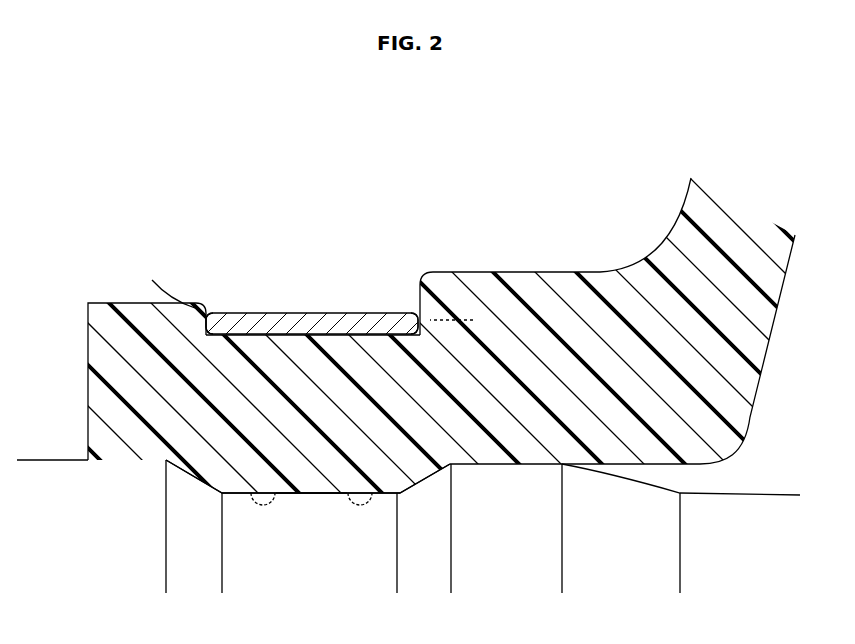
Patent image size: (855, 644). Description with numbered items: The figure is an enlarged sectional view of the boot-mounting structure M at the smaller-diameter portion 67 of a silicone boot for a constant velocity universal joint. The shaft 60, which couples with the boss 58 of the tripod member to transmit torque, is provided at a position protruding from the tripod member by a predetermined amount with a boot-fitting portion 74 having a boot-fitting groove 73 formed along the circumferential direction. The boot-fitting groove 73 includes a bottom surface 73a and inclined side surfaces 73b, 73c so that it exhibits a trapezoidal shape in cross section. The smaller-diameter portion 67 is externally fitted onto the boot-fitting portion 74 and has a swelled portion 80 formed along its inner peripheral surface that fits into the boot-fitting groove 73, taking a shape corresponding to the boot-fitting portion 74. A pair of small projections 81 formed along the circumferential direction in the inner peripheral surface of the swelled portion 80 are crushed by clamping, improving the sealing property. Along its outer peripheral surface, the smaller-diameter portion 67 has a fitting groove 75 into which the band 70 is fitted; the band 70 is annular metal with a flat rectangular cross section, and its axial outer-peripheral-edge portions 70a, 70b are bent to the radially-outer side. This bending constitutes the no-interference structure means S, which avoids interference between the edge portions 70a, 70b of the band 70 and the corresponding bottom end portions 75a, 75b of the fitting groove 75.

The boss 58 is at (490, 262).
The shaft 60 is at (51, 459).
The smaller-diameter portion 67 is at (280, 370).
The band 70 is at (313, 312).
The axial outer-peripheral-edge portion 70a is at (403, 320).
The axial outer-peripheral-edge portion 70b is at (212, 322).
The boot-fitting groove 73 is at (385, 512).
The bottom surface 73a is at (323, 510).
The inclined side surface 73b is at (192, 492).
The inclined side surface 73c is at (437, 532).
The boot-fitting portion 74 is at (426, 494).
The fitting groove 75 is at (293, 313).
The bottom end portion 75a is at (408, 316).
The bottom end portion 75b is at (207, 313).
The swelled portion 80 is at (300, 495).
The small projection 81 is at (260, 490).
The boot-mounting structure M is at (352, 297).
The no-interference structure means S is at (315, 296).